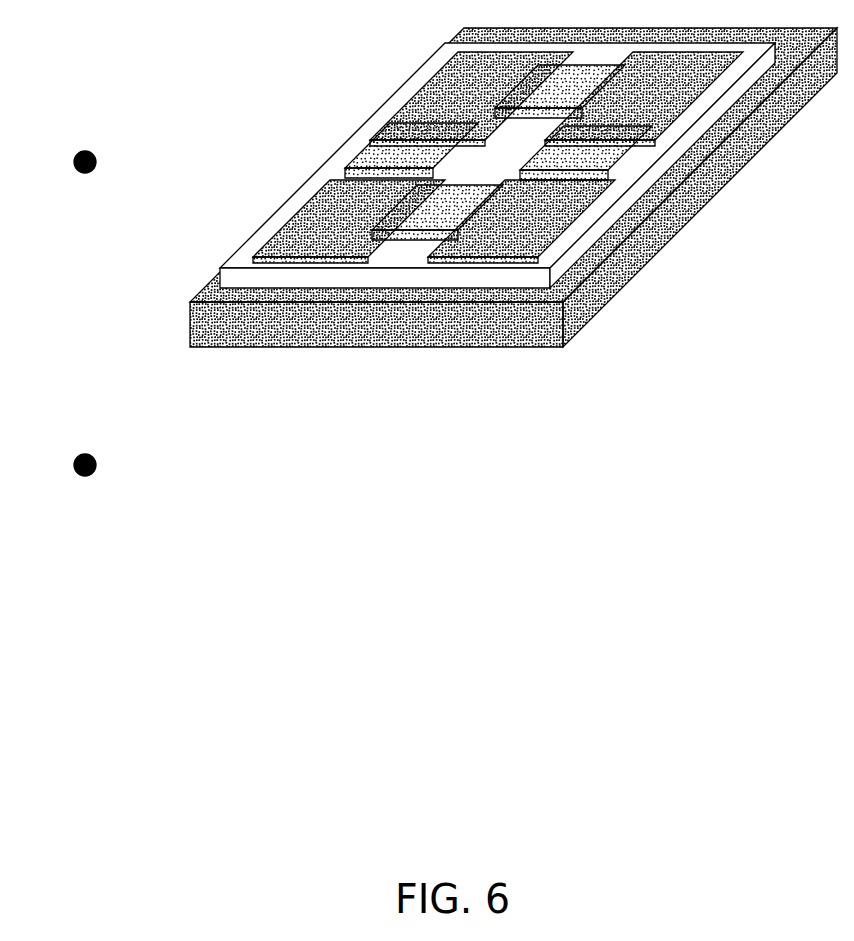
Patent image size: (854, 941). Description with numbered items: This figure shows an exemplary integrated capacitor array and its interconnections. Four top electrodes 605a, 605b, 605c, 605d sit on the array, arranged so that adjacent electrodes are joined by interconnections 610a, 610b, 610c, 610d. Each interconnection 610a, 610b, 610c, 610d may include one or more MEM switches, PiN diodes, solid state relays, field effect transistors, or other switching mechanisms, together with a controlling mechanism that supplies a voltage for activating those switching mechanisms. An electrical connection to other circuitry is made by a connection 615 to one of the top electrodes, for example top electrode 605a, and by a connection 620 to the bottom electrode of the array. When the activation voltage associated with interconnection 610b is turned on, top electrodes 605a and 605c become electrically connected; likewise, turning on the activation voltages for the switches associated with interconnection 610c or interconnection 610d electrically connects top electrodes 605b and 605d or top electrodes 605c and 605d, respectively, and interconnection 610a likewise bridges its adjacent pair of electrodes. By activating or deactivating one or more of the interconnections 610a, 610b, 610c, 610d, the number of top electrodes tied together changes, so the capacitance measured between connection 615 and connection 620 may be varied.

The top electrode 605a is at (349, 221).
The top electrode 605b is at (521, 221).
The top electrode 605c is at (471, 99).
The top electrode 605d is at (644, 99).
The interconnection 610a is at (437, 212).
The interconnection 610b is at (411, 150).
The interconnection 610c is at (586, 153).
The interconnection 610d is at (560, 91).
The connection 615 is at (282, 242).
The connection 620 is at (282, 347).